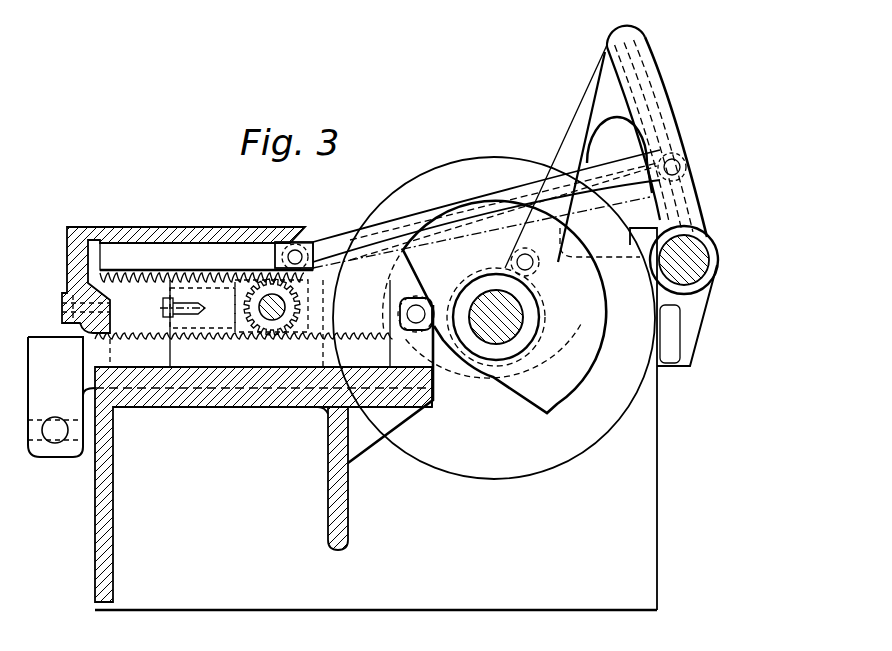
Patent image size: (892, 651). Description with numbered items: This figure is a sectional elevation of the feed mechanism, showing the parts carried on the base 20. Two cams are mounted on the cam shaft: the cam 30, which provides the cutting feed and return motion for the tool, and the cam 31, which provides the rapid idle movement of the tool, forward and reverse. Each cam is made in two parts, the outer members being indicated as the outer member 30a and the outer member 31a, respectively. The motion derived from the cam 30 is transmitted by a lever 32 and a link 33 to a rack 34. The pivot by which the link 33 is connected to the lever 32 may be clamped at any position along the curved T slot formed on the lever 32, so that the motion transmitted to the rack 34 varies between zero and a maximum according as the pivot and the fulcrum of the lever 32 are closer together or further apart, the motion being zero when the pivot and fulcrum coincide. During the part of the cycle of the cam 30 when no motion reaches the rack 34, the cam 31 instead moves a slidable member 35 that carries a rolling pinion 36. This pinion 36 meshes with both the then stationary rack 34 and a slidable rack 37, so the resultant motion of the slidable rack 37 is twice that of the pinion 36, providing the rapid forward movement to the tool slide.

The base 20 is at (628, 572).
The cam 30 is at (400, 215).
The outer member of cam 30a is at (515, 250).
The cam 31 is at (558, 388).
The outer member of cam 31a is at (507, 455).
The lever 32 is at (582, 133).
The link 33 is at (523, 203).
The rack 34 is at (150, 252).
The slidable member 35 is at (227, 295).
The rolling pinion 36 is at (263, 292).
The slidable rack 37 is at (73, 443).